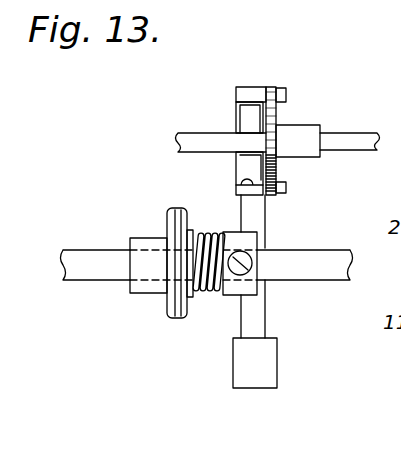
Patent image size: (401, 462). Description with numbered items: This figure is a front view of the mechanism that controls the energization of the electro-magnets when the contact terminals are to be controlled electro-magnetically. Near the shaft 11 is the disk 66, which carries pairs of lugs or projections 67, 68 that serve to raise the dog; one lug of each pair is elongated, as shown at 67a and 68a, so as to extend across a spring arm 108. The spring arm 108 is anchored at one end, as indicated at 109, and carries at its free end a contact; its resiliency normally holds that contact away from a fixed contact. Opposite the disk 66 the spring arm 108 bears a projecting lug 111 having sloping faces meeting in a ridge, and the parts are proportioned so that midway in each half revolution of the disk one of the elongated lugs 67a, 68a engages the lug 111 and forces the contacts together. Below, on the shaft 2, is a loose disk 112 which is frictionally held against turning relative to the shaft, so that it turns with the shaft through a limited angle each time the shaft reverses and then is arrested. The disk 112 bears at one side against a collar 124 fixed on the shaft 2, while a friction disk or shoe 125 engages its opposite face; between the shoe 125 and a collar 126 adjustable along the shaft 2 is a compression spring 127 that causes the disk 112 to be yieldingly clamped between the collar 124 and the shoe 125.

The shaft 2 is at (105, 268).
The shaft 11 is at (177, 135).
The disk 66 is at (278, 118).
The lug 67 is at (286, 89).
The elongated lug 67a is at (244, 87).
The lug 68 is at (286, 190).
The elongated lug 68a is at (250, 186).
The spring arm 108 is at (258, 320).
The anchor 109 is at (262, 366).
The projecting lug 111 is at (248, 128).
The loose disk 112 is at (183, 317).
The collar 124 is at (139, 238).
The friction disk or shoe 125 is at (212, 190).
The adjustable collar 126 is at (247, 242).
The compression spring 127 is at (208, 232).